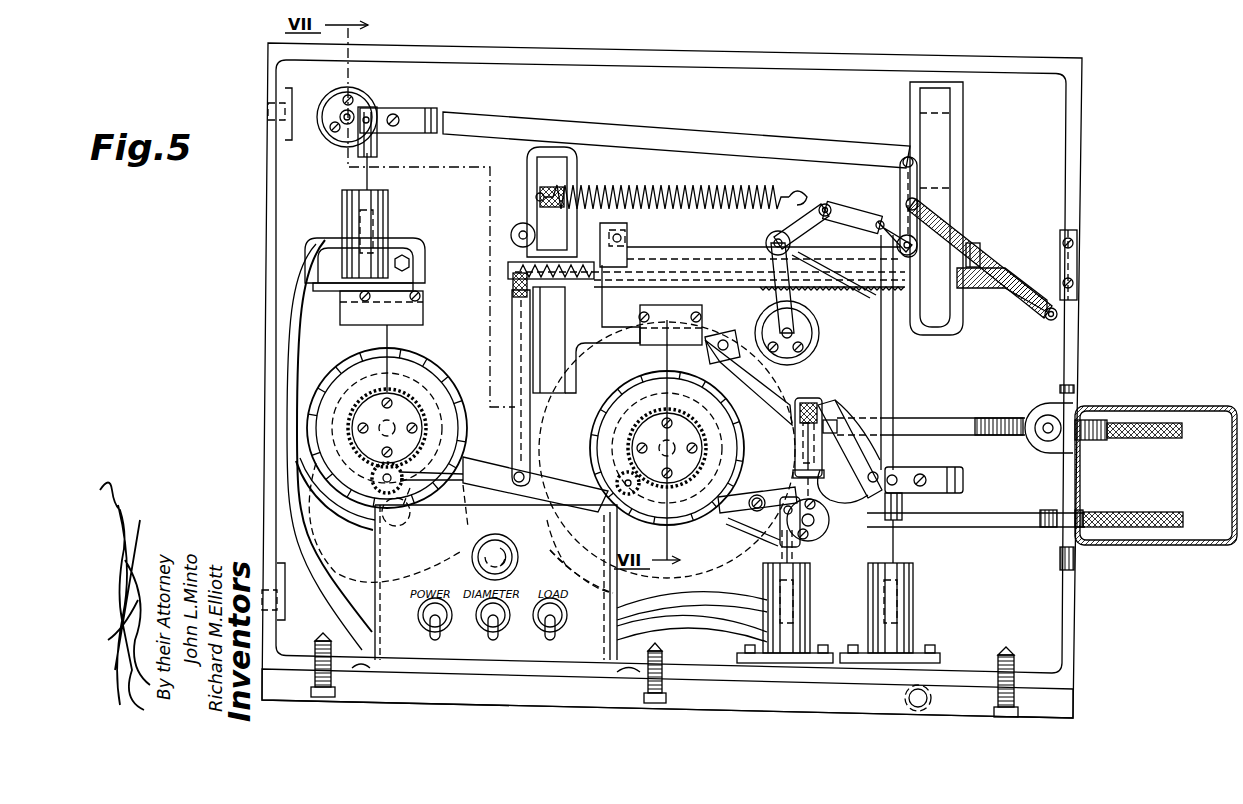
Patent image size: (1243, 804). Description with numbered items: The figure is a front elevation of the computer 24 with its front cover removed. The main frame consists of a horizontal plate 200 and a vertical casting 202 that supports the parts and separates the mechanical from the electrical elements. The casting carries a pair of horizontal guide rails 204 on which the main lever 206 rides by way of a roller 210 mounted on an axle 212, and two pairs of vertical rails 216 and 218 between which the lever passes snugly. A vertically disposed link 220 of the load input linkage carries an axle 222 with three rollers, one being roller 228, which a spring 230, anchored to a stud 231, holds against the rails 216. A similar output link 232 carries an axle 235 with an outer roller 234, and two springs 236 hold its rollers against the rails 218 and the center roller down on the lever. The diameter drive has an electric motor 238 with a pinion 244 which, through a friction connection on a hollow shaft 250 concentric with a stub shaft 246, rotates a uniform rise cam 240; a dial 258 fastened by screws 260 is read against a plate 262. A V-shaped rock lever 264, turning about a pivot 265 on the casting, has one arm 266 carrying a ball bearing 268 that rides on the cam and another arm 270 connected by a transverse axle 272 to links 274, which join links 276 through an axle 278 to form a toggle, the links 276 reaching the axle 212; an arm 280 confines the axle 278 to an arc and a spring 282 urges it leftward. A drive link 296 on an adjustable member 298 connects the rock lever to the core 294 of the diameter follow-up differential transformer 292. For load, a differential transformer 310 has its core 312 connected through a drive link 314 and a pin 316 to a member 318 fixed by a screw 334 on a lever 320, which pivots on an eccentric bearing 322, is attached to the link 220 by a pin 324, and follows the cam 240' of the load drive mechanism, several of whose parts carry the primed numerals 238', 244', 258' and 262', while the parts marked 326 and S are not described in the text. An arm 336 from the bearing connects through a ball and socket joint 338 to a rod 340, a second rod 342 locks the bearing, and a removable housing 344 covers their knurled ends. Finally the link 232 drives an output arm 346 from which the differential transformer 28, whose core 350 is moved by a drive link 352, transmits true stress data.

The differential transformer 28 is at (345, 198).
The core 350 is at (352, 218).
The drive link 352 is at (378, 150).
The output arm 346 is at (545, 122).
The spring 282 is at (630, 187).
The vertical rails 216 is at (540, 213).
The ball bearing roller 228 is at (514, 228).
The axle 222 is at (519, 236).
The main lever 206 is at (600, 252).
The horizontal guide rails 204 is at (648, 246).
The axle 212 is at (766, 242).
The roller 210 is at (710, 271).
The links 276 is at (800, 222).
The transverse axle 278 is at (822, 204).
The transverse axle 272 is at (870, 206).
The links 274 is at (843, 210).
The link 232 is at (903, 160).
The vertical rails 218 is at (942, 166).
The axle 235 is at (897, 245).
The springs 236 is at (978, 242).
The outer roller 234 is at (950, 257).
The spring 230 is at (988, 288).
The vertical casting 202 is at (1084, 125).
The computer 24 is at (1150, 192).
The stud 231 is at (513, 282).
The link 220 is at (512, 356).
The wheel 262' is at (386, 425).
The hub 258' is at (369, 398).
The pin 324 is at (515, 473).
The gear 326 is at (366, 475).
The cam 240' is at (384, 522).
The pulley 244' is at (423, 512).
The guard 238' is at (331, 445).
The electric motor 238 is at (667, 450).
The lever 320 is at (541, 468).
The pinion 244 is at (504, 492).
The plate 262 is at (667, 447).
The uniform rise cam 240 is at (586, 329).
The dial 258 is at (642, 435).
The switch S is at (640, 308).
The ball bearing 268 is at (725, 338).
The arm 280 is at (805, 318).
The arm 266 is at (790, 385).
The arm 270 is at (884, 342).
The V-shaped rock lever 264 is at (884, 404).
The stub shaft 246 is at (795, 412).
The hollow shaft 250 is at (780, 443).
The screws 260 is at (780, 470).
The screw 334 is at (756, 495).
The ball and socket joint 338 is at (848, 440).
The arm 336 is at (843, 483).
The pivot 265 is at (878, 473).
The member 298 is at (946, 468).
The drive link 296 is at (903, 507).
The rod 340 is at (1168, 438).
The second rod 342 is at (1128, 512).
The removable housing 344 is at (1168, 542).
The member 318 is at (787, 530).
The pin 316 is at (782, 530).
The drive link 314 is at (780, 524).
The eccentric bearing 322 is at (800, 548).
The differential transformer 310 is at (810, 593).
The core 312 is at (795, 612).
The diameter follow-up differential transformer 292 is at (913, 580).
The core 294 is at (898, 600).
The horizontal plate 200 is at (1075, 696).